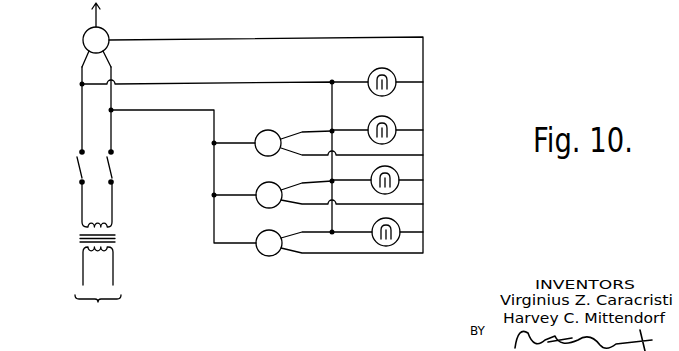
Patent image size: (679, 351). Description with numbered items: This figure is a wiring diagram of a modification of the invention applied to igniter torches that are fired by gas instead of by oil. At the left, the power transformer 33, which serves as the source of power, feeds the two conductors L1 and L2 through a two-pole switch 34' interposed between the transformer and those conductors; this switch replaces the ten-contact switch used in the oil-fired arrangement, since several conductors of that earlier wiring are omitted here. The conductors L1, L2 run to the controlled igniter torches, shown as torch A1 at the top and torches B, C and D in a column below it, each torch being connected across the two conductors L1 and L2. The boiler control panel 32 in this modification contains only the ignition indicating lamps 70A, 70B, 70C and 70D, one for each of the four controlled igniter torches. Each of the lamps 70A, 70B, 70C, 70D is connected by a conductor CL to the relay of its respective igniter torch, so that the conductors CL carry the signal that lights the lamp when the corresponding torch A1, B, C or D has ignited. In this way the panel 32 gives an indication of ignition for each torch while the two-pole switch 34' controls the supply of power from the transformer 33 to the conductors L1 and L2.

The igniter torch A' A1 is at (84, 31).
The conductors CL is at (126, 39).
The conductor L1 is at (113, 71).
The conductor L2 is at (80, 69).
The two-pole switch 34' is at (65, 167).
The power transformer 33 is at (80, 240).
The boiler control panel 32 is at (222, 208).
The igniter torch B' B is at (256, 156).
The igniter torch C' C is at (255, 208).
The igniter torch D' D is at (255, 256).
The ignition indicating lamp 70A is at (369, 79).
The ignition indicating lamp 70B is at (369, 127).
The ignition indicating lamp 70C is at (372, 178).
The ignition indicating lamp 70D is at (373, 228).